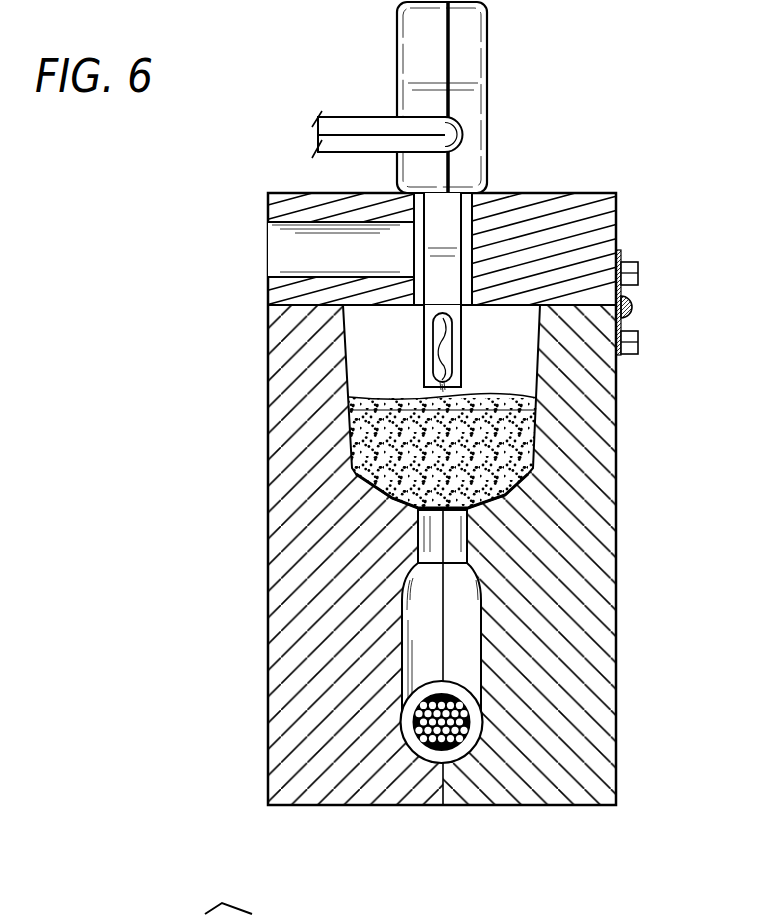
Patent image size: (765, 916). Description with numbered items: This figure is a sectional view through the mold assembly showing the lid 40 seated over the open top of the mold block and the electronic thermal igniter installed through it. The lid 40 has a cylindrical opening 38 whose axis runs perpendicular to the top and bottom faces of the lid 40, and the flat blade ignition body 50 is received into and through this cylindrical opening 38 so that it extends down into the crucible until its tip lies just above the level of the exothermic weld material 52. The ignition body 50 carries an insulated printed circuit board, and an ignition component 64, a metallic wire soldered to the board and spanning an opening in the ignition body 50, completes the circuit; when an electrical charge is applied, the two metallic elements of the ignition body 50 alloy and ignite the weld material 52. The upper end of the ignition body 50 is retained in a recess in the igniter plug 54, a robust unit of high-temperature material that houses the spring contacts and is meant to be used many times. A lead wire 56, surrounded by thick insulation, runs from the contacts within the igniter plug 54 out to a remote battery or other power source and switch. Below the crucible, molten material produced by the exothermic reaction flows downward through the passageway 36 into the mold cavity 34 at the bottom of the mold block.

The mold cavity 34 is at (477, 724).
The passageway 36 is at (463, 627).
The cylindrical opening 38 is at (419, 222).
The lid 40 is at (545, 208).
The ignition body 50 is at (430, 318).
The exothermic weld material 52 is at (478, 442).
The igniter plug 54 is at (470, 105).
The lead wire 56 is at (358, 128).
The ignition component 64 is at (440, 365).